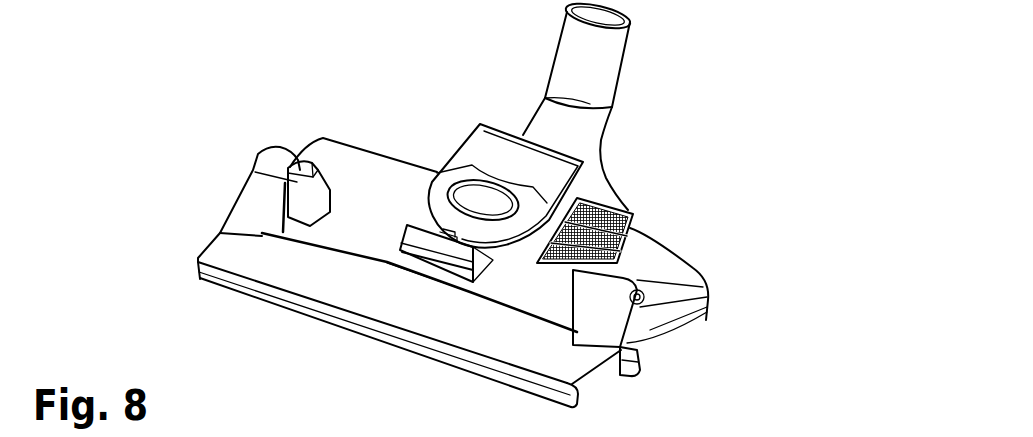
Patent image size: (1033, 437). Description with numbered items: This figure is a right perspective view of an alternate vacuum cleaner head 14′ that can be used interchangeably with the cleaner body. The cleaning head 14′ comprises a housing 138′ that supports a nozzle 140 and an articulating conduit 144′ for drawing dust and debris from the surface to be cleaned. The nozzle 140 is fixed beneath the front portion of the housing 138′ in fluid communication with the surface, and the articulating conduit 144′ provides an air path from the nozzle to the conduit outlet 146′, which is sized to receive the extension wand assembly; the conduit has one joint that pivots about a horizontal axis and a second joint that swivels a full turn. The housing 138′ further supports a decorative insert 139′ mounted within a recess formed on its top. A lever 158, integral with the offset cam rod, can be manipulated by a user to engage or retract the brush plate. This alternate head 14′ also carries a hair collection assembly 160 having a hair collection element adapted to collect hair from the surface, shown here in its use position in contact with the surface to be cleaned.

The vacuum cleaner head 14′ is at (243, 97).
The housing 138′ is at (368, 170).
The decorative insert 139′ is at (493, 147).
The nozzle 140 is at (650, 365).
The articulating conduit 144′ is at (592, 142).
The conduit outlet 146′ is at (620, 14).
The lever 158 is at (627, 212).
The hair collection assembly 160 is at (227, 250).